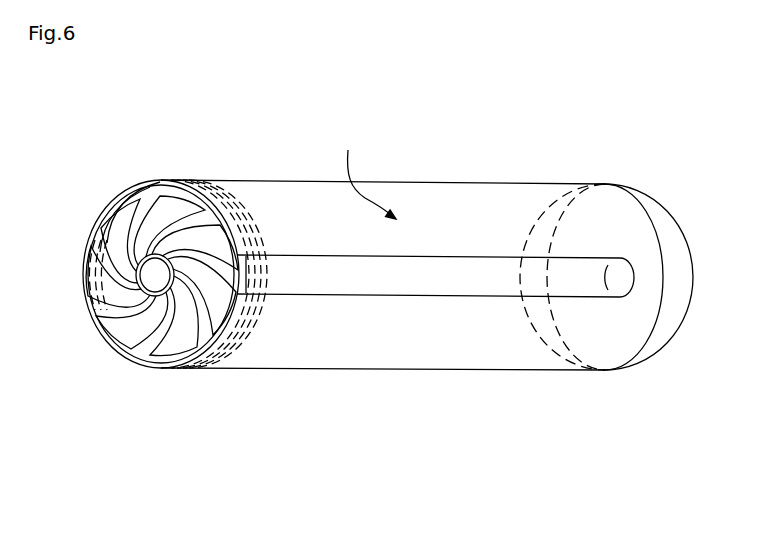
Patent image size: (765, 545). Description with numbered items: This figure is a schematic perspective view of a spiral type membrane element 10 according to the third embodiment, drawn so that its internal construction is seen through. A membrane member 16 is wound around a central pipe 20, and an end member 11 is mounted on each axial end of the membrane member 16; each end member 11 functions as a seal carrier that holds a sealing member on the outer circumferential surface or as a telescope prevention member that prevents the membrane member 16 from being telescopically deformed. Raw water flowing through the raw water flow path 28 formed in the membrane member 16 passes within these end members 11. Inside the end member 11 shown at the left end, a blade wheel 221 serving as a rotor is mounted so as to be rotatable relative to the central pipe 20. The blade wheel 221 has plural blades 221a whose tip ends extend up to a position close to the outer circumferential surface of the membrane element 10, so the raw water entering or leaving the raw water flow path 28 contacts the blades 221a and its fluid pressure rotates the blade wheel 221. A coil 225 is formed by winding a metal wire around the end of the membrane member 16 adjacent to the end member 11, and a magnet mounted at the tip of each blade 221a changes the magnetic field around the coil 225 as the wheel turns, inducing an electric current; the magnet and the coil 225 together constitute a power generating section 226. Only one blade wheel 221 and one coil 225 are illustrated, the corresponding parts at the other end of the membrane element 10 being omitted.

The membrane element 10 is at (590, 170).
The end member 11 is at (120, 357).
The membrane member 16 is at (318, 368).
The central pipe 20 is at (470, 297).
The raw water flow path 28 is at (365, 172).
The blade wheel 221 is at (128, 198).
The blades 221a is at (193, 193).
The coil 225 is at (91, 216).
The power generating section 226 is at (233, 331).